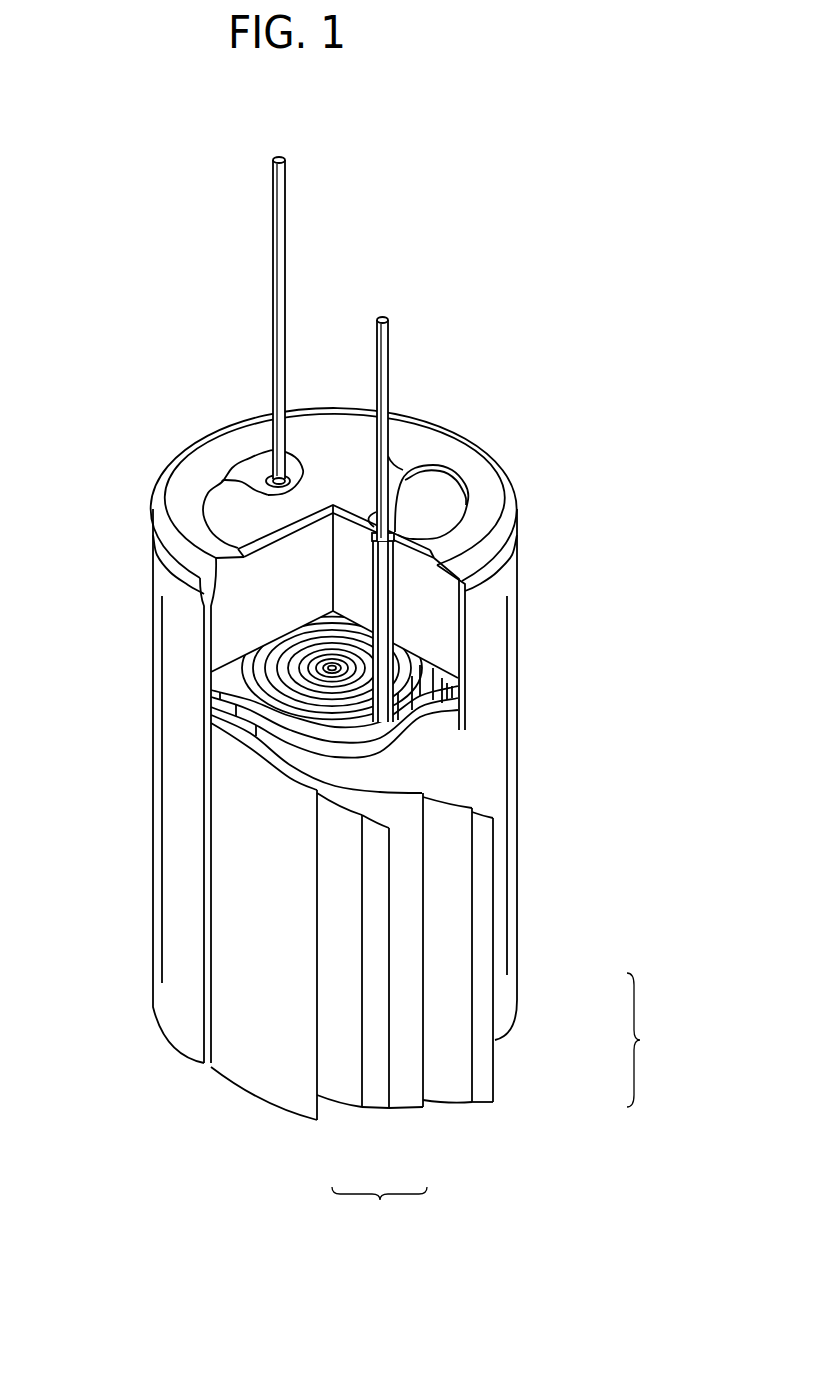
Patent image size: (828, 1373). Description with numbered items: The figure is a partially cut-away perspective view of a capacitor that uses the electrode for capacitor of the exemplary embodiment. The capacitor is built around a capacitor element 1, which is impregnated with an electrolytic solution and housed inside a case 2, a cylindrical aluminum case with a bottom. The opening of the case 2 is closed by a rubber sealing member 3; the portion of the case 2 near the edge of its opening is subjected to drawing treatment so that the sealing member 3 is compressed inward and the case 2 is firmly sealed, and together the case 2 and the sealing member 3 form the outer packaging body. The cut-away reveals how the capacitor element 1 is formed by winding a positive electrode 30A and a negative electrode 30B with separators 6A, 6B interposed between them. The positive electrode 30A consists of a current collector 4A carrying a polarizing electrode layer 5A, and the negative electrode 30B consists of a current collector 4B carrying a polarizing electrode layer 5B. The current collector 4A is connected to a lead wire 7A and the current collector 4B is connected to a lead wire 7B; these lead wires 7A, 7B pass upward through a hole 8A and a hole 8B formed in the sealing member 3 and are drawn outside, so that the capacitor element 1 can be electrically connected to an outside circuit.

The capacitor element 1 is at (245, 682).
The case 2 is at (187, 810).
The sealing member 3 is at (295, 547).
The current collector 4A is at (487, 1065).
The polarizing electrode layer 5A is at (453, 955).
The separator 6A is at (409, 878).
The current collector 4B is at (377, 1097).
The polarizing electrode layer 5B is at (335, 1087).
The separator 6B is at (265, 1080).
The lead wire 7A is at (285, 203).
The lead wire 7B is at (388, 367).
The hole 8A is at (268, 473).
The hole 8B is at (390, 533).
The positive electrode 30A is at (666, 1040).
The negative electrode 30B is at (379, 1213).